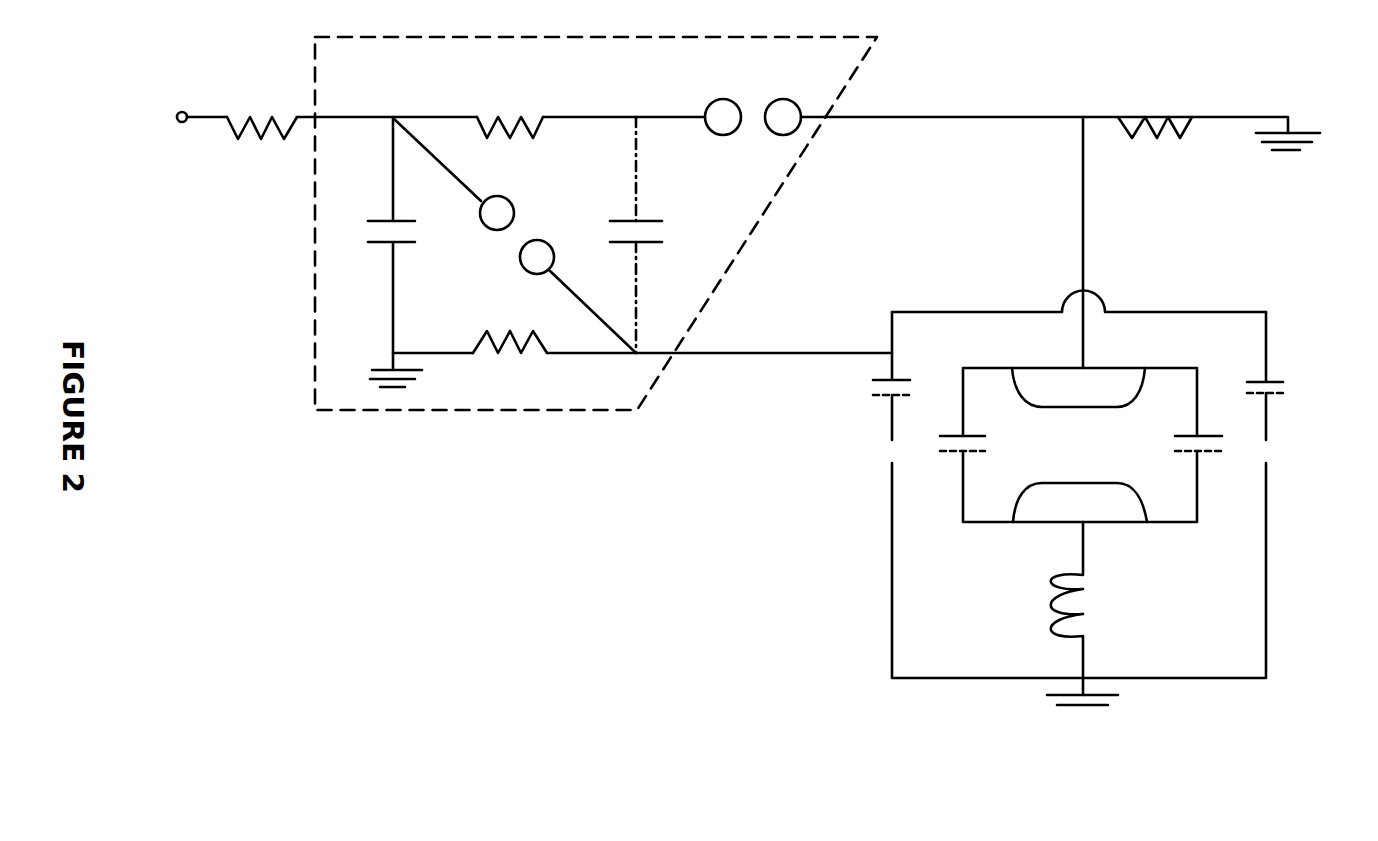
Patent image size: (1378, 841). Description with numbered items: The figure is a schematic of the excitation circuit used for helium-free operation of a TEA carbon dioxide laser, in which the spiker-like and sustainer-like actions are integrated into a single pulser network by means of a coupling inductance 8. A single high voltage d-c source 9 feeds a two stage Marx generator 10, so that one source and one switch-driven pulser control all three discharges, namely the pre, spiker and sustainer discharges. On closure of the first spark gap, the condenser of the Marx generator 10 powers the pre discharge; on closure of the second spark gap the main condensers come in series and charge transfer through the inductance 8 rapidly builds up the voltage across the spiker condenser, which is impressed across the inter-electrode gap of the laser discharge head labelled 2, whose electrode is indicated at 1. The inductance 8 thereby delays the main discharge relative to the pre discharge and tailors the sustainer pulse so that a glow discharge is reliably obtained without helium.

The electrode 1 is at (1114, 379).
The plasma reactor 2 is at (863, 481).
The coupling inductance 8 is at (1092, 613).
The high voltage d-c source 9 is at (171, 86).
The two stage Marx generator 10 is at (303, 358).